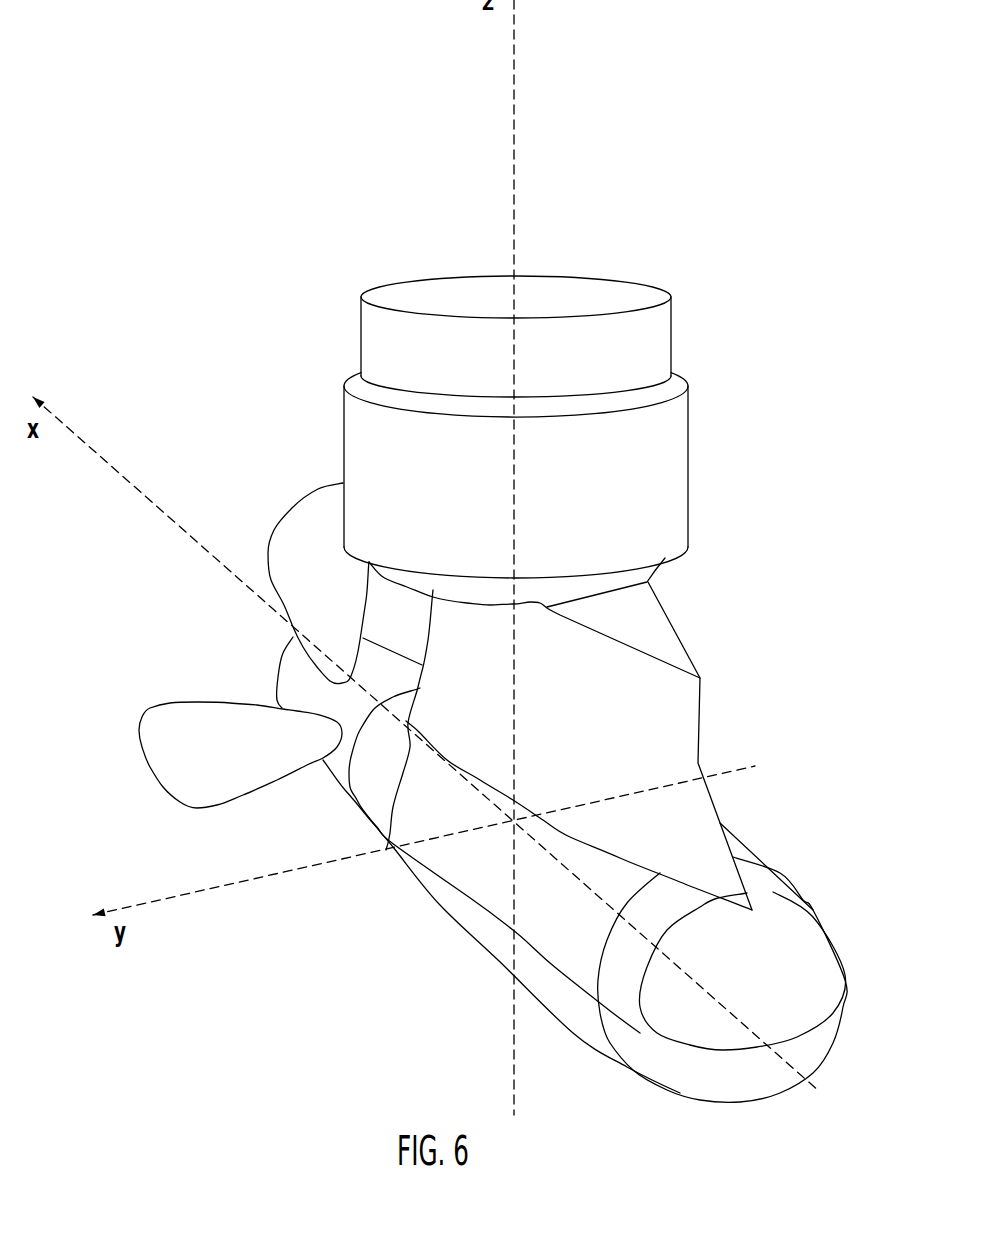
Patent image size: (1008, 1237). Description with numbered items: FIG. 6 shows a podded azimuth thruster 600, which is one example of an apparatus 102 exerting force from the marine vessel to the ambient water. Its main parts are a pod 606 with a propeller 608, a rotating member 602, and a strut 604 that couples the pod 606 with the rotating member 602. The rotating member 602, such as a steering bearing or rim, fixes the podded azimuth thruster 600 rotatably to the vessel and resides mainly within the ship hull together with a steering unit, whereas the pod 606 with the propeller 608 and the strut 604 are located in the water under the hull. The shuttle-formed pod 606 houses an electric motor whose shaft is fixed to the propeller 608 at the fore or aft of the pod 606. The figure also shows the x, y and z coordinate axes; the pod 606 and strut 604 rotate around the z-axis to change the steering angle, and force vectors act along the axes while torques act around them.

The apparatus exerting force 102 is at (285, 945).
The podded azimuth thruster 600 is at (350, 945).
The rotating member 602 is at (670, 463).
The strut 604 is at (680, 720).
The pod 606 is at (822, 955).
The propeller 608 is at (290, 670).